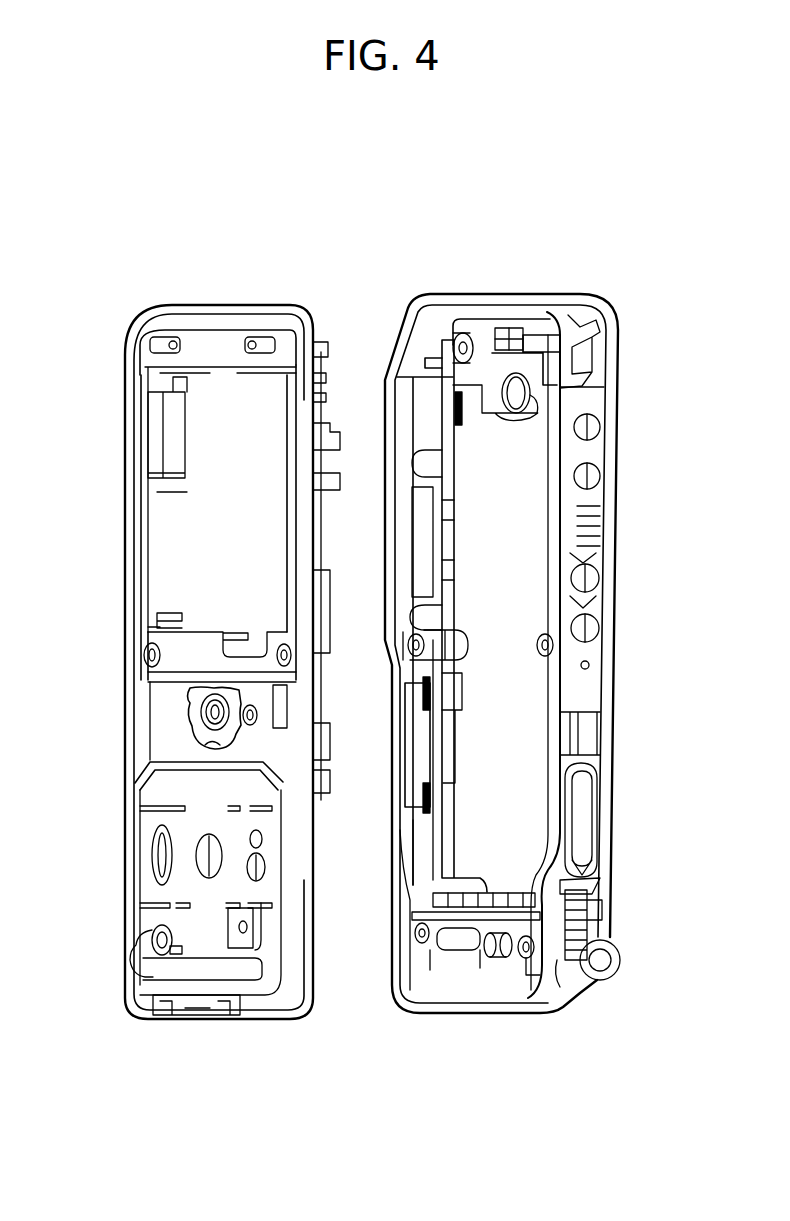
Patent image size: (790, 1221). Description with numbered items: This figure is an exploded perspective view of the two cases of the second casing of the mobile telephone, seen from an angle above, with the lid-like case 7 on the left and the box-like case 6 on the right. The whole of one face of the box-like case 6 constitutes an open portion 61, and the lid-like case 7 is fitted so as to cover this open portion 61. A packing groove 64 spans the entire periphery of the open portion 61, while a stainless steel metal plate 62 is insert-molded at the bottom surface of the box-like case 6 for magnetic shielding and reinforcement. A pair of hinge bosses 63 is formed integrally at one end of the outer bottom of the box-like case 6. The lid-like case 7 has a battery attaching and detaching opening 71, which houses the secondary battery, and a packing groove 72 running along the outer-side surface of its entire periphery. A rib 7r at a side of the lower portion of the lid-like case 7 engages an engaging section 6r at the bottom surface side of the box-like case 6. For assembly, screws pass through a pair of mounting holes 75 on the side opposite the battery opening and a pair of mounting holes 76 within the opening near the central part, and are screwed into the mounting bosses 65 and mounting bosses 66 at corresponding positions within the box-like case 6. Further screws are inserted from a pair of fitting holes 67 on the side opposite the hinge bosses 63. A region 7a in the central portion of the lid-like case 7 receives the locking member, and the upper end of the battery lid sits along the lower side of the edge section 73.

The lid-like case 7 is at (222, 318).
The packing groove 72 is at (140, 515).
The battery attaching and detaching opening 71 is at (285, 522).
The rib 7r is at (180, 490).
The mounting holes 76 is at (148, 653).
The region 7a is at (158, 711).
The edge section 73 is at (215, 757).
The mounting holes 75 is at (155, 938).
The box-like case 6 is at (596, 690).
The packing groove 64 is at (482, 300).
The fitting holes 67 is at (452, 346).
The metal plate 62 is at (495, 540).
The engaging section 6r is at (436, 462).
The mounting bosses 66 is at (412, 643).
The open portion 61 is at (424, 833).
The mounting bosses 65 is at (415, 926).
The hinge bosses 63 is at (612, 968).